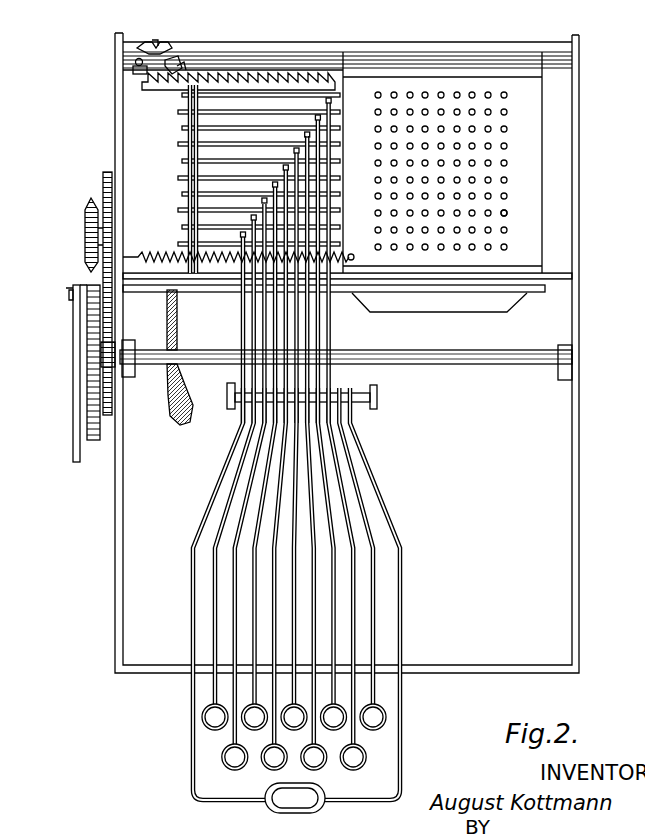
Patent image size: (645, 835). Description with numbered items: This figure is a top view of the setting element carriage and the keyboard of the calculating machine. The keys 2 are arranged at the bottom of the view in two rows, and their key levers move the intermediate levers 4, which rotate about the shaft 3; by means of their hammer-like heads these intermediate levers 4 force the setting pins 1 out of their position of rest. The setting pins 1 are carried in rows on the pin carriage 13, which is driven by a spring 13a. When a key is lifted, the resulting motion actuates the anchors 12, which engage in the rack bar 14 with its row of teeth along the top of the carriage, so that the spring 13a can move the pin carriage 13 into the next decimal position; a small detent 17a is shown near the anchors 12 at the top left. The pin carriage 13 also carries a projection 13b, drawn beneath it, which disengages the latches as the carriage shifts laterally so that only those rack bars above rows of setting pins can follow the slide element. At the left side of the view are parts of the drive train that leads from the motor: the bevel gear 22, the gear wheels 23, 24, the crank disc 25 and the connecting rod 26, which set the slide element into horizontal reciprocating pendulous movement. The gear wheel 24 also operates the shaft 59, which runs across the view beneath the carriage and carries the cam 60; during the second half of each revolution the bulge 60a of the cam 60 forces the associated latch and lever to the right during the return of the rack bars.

The setting pins 1 is at (509, 214).
The keys 2 is at (222, 757).
The shaft 3 is at (188, 184).
The intermediate levers 4 is at (180, 142).
The anchors 12 is at (140, 72).
The pin carriage 13 is at (520, 153).
The spring 13a is at (238, 245).
The projection 13b is at (466, 300).
The rack bar 14 is at (185, 82).
The detent 17a is at (154, 42).
The bevel gear 22 is at (88, 228).
The gear wheel 23 is at (103, 176).
The gear wheel 24 is at (114, 345).
The crank disc 25 is at (93, 323).
The connecting rod 26 is at (77, 428).
The shaft 59 is at (478, 360).
The cam 60 is at (177, 330).
The bulge 60a is at (192, 412).